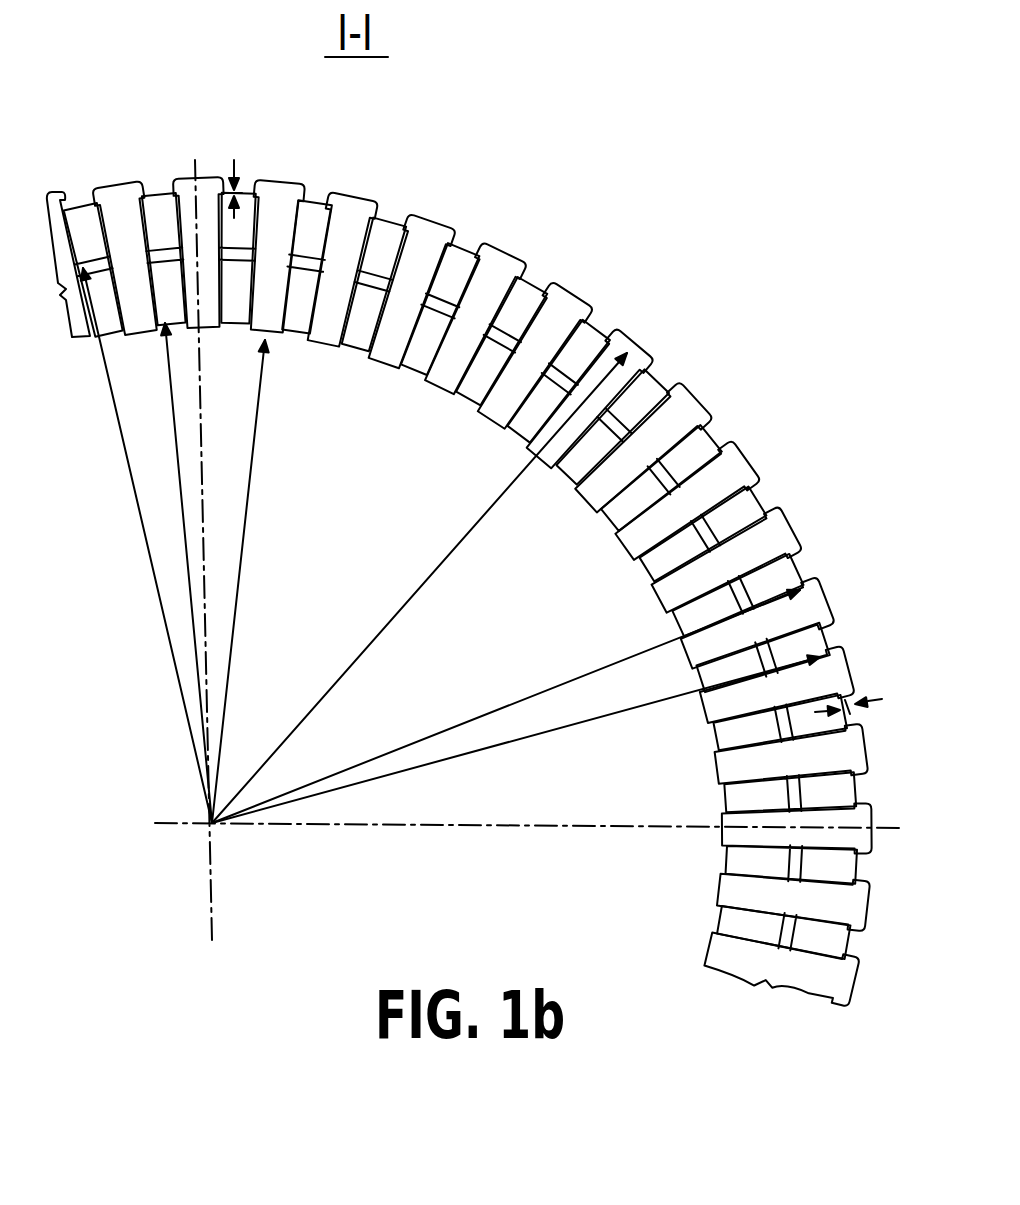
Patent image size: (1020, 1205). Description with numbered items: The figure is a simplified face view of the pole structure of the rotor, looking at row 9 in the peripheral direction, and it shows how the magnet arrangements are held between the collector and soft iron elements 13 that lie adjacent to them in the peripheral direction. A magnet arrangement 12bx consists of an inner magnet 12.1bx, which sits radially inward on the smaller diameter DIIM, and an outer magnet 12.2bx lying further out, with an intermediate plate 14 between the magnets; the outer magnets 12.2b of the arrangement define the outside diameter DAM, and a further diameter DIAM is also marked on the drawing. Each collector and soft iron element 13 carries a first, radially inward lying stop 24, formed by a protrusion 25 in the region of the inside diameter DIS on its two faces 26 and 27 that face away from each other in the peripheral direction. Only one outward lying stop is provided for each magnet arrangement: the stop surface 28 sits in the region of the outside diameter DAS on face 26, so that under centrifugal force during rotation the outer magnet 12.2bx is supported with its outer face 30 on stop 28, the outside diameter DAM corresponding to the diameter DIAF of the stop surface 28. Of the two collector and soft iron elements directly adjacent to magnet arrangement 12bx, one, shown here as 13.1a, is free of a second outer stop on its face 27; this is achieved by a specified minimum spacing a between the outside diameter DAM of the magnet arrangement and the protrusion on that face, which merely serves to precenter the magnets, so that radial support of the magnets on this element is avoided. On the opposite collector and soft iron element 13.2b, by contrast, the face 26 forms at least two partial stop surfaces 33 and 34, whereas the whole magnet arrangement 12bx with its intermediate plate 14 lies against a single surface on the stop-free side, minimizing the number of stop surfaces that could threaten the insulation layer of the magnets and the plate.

The row 9 is at (250, 110).
The magnet arrangement 12bx is at (553, 263).
The inner magnet 12.1bx is at (483, 377).
The outer magnet 12.2bx is at (537, 280).
The outer magnet 12.2b is at (747, 522).
The collector and soft iron element 13 is at (563, 313).
The collector and soft iron element 13.1a is at (505, 273).
The collector and soft iron element 13.2b is at (587, 317).
The intermediate plate 14 is at (630, 533).
The radially inward lying stop 24 is at (410, 380).
The protrusion 25 is at (547, 457).
The face 26 is at (618, 485).
The face 27 is at (413, 352).
The outward lying stop surface 28 is at (747, 463).
The outer face 30 is at (800, 573).
The partial stop surface 33 is at (492, 383).
The partial stop surface 34 is at (547, 290).
The minimum spacing a is at (868, 700).
The inner radius dimension DIAM is at (113, 412).
The inner magnet diameter DIIM is at (167, 387).
The inside diameter of collector and soft iron element DIS is at (257, 413).
The outside diameter of collector and soft iron element DAS is at (440, 575).
The stop surface diameter DIAF is at (540, 692).
The outside diameter of magnet arrangement DAM is at (545, 734).